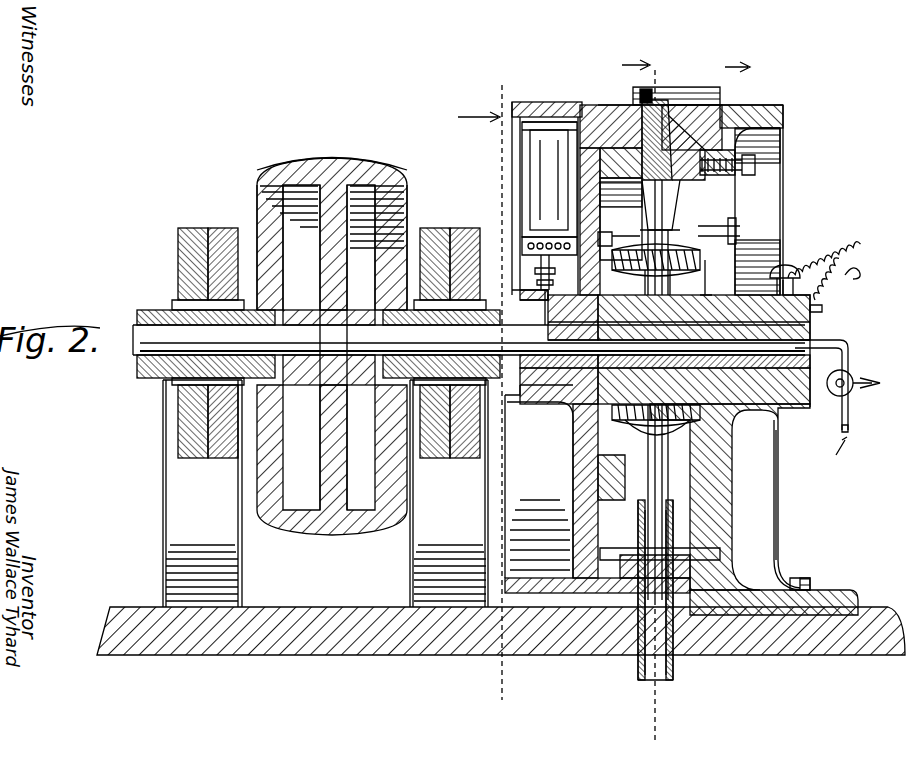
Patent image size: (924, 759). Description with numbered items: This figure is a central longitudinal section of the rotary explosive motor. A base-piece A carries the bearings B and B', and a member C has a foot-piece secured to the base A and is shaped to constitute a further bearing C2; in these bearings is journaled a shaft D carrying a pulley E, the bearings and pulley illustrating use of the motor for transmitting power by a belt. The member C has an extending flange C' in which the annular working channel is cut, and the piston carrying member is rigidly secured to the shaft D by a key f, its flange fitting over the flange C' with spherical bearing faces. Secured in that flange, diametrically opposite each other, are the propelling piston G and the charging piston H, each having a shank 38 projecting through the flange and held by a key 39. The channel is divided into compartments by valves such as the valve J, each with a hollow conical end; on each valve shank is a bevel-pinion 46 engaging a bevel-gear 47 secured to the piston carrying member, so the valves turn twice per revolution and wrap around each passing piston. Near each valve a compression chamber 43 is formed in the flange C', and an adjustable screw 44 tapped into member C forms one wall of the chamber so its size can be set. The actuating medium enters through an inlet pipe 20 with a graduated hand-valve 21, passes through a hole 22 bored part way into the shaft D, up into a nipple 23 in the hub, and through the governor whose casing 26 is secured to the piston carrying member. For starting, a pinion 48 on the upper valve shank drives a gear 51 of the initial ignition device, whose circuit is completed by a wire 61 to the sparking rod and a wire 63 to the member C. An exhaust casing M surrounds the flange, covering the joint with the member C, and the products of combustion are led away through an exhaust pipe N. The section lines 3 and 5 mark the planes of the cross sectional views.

The base-piece A is at (284, 657).
The bearing B is at (200, 417).
The bearing B' is at (439, 417).
The member C is at (708, 242).
The extending flange C' is at (597, 551).
The bearing C2 is at (795, 418).
The shaft D is at (133, 355).
The pulley E is at (332, 329).
The housing E' is at (661, 201).
The lower bearing E'' is at (660, 632).
The key f is at (540, 490).
The propelling piston G is at (740, 540).
The charging piston H is at (640, 105).
The valve J is at (680, 130).
The exhaust casing M is at (702, 90).
The exhaust pipe N is at (663, 665).
The section line 3 is at (686, 400).
The section line 5 is at (482, 389).
The inlet pipe 20 is at (850, 418).
The graduated hand-valve 21 is at (870, 383).
The hole 22 is at (786, 450).
The nipple 23 is at (535, 278).
The casing 26 is at (522, 175).
The shank 38 is at (665, 100).
The key 39 is at (655, 100).
The chamber 43 is at (735, 130).
The adjustable screw 44 is at (783, 163).
The bevel-pinion 46 is at (742, 270).
The bevel-gear 47 is at (575, 440).
The pinion 48 is at (620, 239).
The gear 51 is at (731, 256).
The wire 61 is at (827, 236).
The wire 63 is at (849, 278).